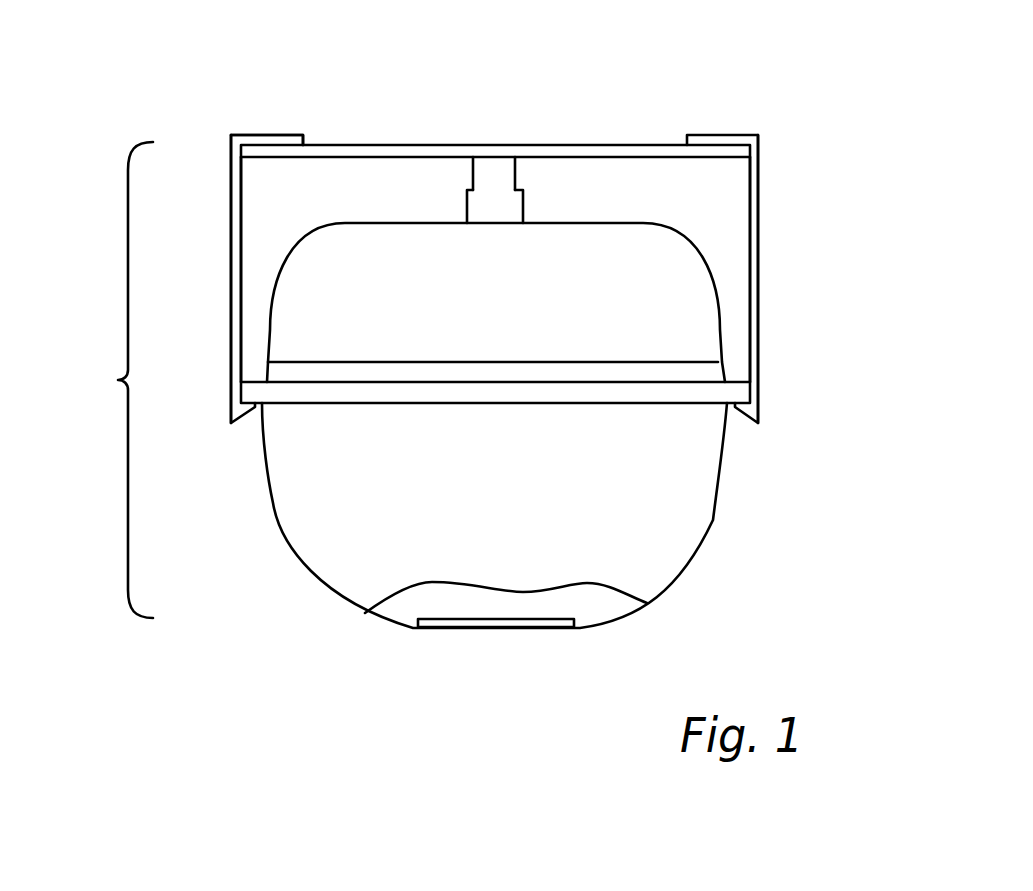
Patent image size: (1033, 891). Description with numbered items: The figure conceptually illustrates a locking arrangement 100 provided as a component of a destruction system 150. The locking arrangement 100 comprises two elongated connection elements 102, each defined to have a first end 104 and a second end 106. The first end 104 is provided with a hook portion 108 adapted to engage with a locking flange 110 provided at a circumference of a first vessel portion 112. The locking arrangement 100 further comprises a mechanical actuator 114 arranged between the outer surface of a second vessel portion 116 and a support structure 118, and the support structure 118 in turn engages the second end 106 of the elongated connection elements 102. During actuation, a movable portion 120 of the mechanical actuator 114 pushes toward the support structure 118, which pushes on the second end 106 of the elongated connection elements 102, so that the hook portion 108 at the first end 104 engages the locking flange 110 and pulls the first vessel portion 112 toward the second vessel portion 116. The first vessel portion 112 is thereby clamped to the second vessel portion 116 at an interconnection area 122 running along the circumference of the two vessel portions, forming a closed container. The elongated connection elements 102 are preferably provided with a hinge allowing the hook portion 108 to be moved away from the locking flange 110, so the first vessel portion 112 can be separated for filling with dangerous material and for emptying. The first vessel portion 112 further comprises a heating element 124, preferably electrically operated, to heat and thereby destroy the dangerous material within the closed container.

The locking arrangement 100 is at (528, 375).
The elongated connection elements 102 is at (230, 270).
The first end 104 is at (574, 406).
The second end 106 is at (509, 237).
The hook portion 108 is at (740, 413).
The locking flange 110 is at (650, 390).
The first vessel portion 112 is at (347, 587).
The mechanical actuator 114 is at (516, 203).
The second vessel portion 116 is at (367, 245).
The support structure 118 is at (658, 145).
The movable portion 120 is at (498, 172).
The interconnection area 122 is at (240, 135).
The heating element 124 is at (523, 622).
The destruction system 150 is at (104, 380).